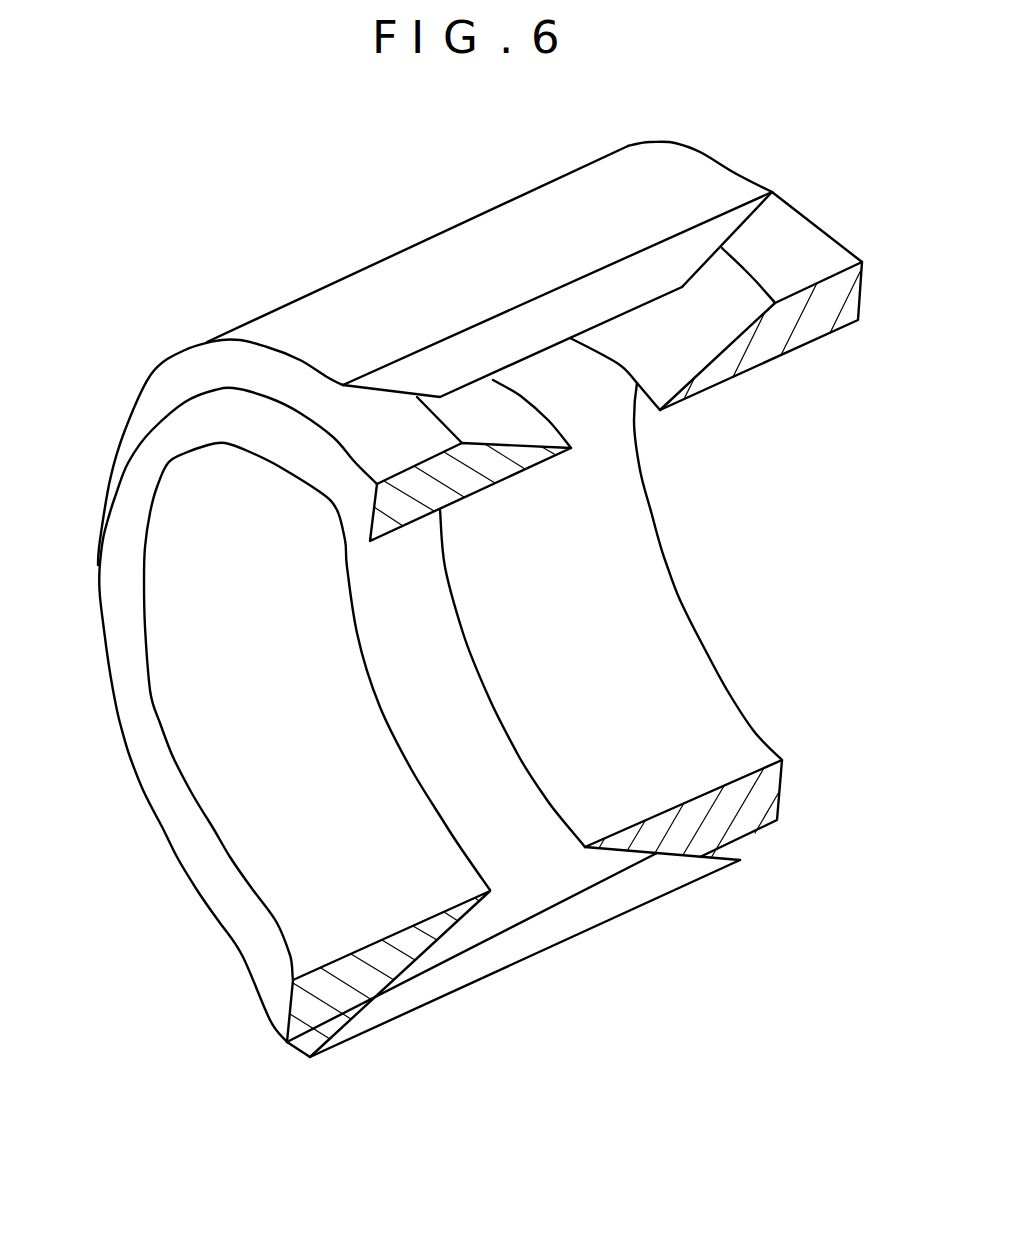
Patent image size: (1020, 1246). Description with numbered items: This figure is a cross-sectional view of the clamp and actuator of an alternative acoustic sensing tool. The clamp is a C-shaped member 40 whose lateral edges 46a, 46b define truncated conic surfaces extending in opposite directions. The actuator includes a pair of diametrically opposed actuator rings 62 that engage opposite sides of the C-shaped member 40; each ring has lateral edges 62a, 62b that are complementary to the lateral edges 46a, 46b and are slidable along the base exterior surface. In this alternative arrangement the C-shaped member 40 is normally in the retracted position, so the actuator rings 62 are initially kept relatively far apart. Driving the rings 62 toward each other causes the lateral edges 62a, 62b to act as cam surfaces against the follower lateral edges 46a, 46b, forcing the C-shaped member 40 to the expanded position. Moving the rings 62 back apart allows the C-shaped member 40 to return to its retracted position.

The C-shaped member 40 is at (460, 238).
The lateral edge 46a is at (372, 392).
The lateral edge 46b is at (747, 225).
The actuator ring 62 is at (155, 457).
The lateral edge 62a is at (560, 447).
The lateral edge 62b is at (683, 348).